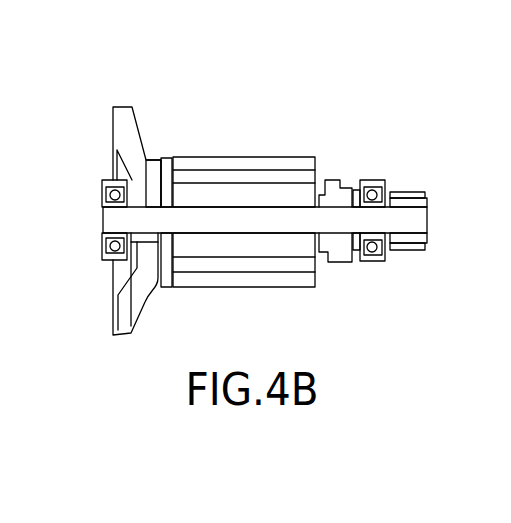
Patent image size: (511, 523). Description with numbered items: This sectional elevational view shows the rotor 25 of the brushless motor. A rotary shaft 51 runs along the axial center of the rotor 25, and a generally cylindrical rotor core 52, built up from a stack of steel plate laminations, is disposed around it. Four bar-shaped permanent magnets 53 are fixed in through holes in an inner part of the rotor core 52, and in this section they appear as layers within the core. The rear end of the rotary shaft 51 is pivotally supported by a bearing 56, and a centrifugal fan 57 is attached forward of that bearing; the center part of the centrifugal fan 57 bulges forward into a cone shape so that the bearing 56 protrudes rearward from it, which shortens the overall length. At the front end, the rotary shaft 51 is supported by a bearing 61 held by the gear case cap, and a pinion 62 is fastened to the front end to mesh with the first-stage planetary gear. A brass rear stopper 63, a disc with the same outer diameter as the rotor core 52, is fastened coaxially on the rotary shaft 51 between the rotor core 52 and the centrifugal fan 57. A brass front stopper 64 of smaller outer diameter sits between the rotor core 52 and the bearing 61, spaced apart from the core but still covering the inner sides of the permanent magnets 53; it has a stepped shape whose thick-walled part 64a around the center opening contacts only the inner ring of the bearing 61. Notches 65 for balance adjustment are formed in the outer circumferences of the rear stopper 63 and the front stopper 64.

The rotor 25 is at (268, 92).
The rotary shaft 51 is at (418, 221).
The rotor core 52 is at (227, 164).
The permanent magnets 53 is at (285, 176).
The bearing 56 is at (102, 197).
The centrifugal fan 57 is at (122, 112).
The bearing 61 is at (372, 181).
The pinion 62 is at (417, 192).
The rear stopper 63 is at (168, 160).
The front stopper 64 is at (327, 181).
The thick-walled part 64a is at (357, 248).
The notches 65 is at (159, 160).